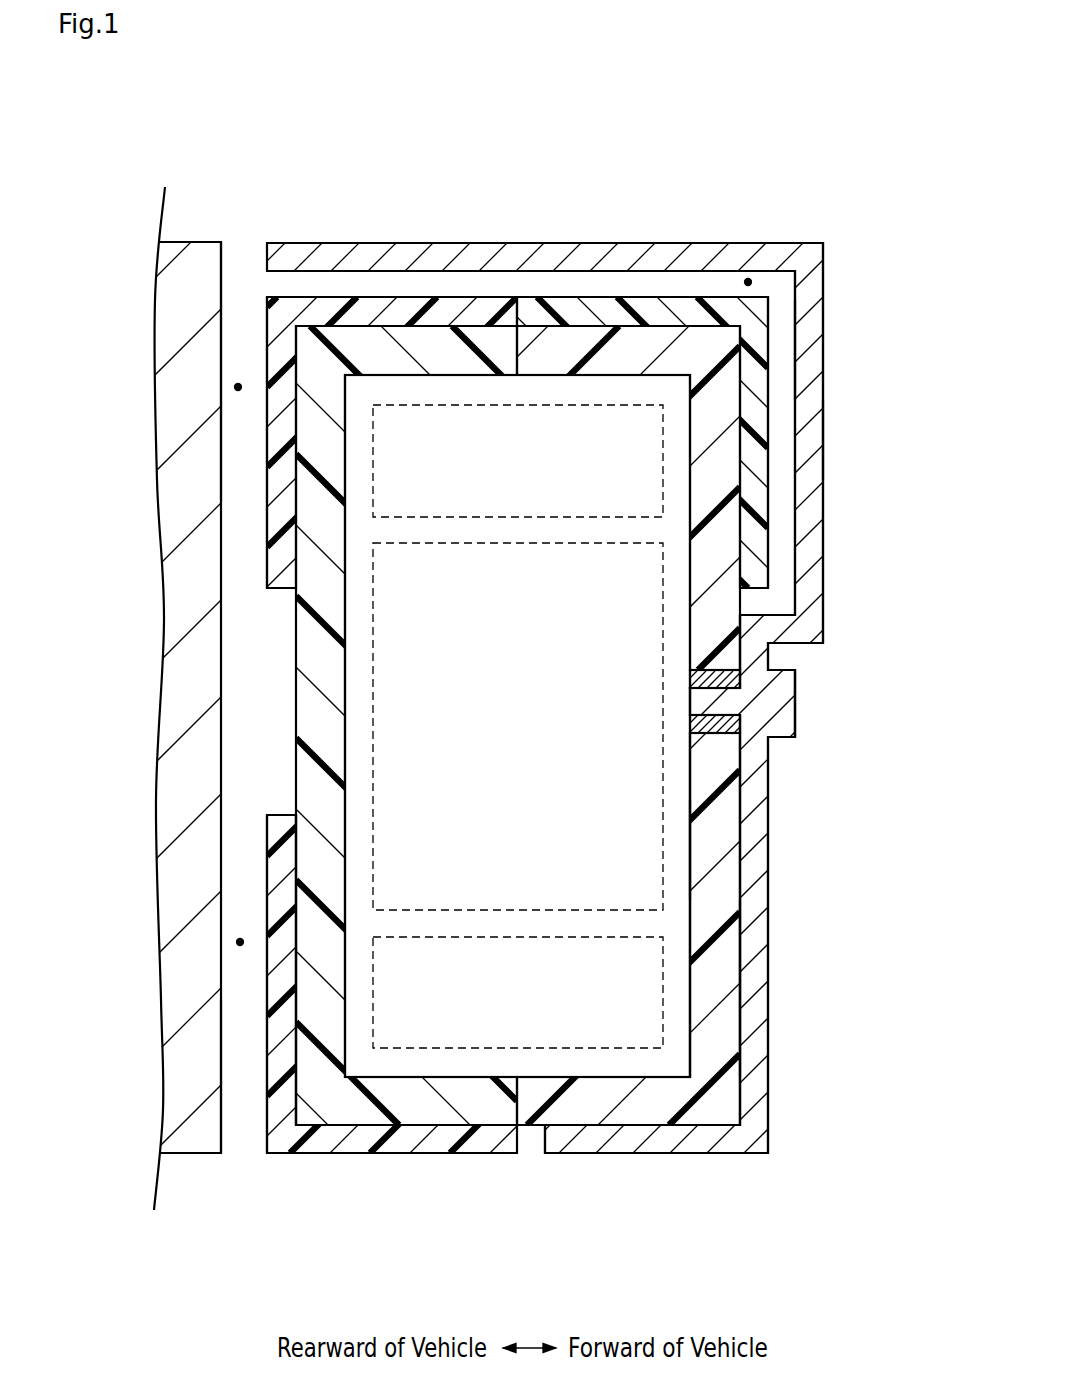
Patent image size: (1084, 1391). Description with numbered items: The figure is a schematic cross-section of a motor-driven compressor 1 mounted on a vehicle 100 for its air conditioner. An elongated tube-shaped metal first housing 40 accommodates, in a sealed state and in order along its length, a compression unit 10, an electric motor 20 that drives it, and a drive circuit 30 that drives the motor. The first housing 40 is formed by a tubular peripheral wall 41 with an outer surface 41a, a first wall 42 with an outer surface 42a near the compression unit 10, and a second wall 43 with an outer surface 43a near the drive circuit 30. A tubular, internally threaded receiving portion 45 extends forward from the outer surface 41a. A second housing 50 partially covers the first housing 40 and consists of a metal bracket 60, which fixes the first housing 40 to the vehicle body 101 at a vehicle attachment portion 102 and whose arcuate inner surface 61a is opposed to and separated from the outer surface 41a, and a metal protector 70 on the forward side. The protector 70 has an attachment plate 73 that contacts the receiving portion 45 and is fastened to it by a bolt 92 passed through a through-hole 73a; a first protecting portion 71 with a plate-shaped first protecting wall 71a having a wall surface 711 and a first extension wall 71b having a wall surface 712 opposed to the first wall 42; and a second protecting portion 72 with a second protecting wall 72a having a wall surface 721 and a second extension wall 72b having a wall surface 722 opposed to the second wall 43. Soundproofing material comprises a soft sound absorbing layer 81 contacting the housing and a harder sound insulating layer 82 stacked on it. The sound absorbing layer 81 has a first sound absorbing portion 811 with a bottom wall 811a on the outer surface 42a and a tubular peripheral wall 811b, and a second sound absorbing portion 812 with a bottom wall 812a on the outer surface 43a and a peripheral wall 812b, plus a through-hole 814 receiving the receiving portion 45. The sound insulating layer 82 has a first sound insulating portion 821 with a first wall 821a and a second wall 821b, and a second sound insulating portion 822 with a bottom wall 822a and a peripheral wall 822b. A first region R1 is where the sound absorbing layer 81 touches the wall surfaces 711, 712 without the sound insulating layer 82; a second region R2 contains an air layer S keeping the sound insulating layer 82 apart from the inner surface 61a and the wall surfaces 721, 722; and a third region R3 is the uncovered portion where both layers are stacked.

The motor-driven compressor 1 is at (238, 115).
The vehicle 100 is at (878, 135).
The compression unit 10 is at (598, 1048).
The electric motor 20 is at (373, 835).
The drive circuit 30 is at (373, 452).
The first housing 40 is at (690, 1047).
The peripheral wall 41 is at (697, 802).
The outer surface of the peripheral wall 41a is at (690, 855).
The first wall 42 is at (528, 1078).
The outer surface of the first wall 42a is at (487, 1080).
The second wall 43 is at (580, 373).
The outer surface of the second wall 43a is at (613, 373).
The receiving portion 45 is at (720, 672).
The second housing 50 is at (490, 695).
The bracket 60 is at (200, 242).
The inner surface 61a is at (222, 260).
The protector 70 is at (770, 912).
The first protecting portion 71 is at (770, 988).
The first protecting wall 71a is at (758, 1037).
The first extension wall 71b is at (655, 1153).
The wall surface 711 is at (742, 958).
The wall surface 712 is at (722, 1140).
The second protecting portion 72 is at (825, 397).
The second protecting wall 72a is at (815, 435).
The second extension wall 72b is at (453, 247).
The wall surface 721 is at (785, 373).
The wall surface 722 is at (675, 283).
The attachment plate 73 is at (843, 612).
The through-hole 73a is at (750, 703).
The sound absorbing layer 81 is at (503, 337).
The first sound absorbing portion 811 is at (353, 1113).
The bottom wall 811a is at (560, 1113).
The peripheral wall 811b is at (307, 1015).
The second sound absorbing portion 812 is at (323, 343).
The bottom wall 812a is at (362, 347).
The peripheral wall 812b is at (308, 545).
The through-hole 814 is at (741, 740).
The sound insulating layer 82 is at (493, 693).
The first sound insulating portion 821 is at (310, 1155).
The first wall 821a is at (463, 1147).
The second wall 821b is at (280, 1075).
The second sound insulating portion 822 is at (713, 300).
The bottom wall 822a is at (530, 307).
The peripheral wall 822b is at (763, 337).
The bolt 92 is at (797, 683).
The vehicle body 101 is at (180, 1153).
The vehicle attachment portion 102 is at (208, 1113).
The first region R1 is at (745, 1097).
The second region R2 is at (787, 305).
The third region R3 is at (278, 1177).
The air layer S is at (748, 282).